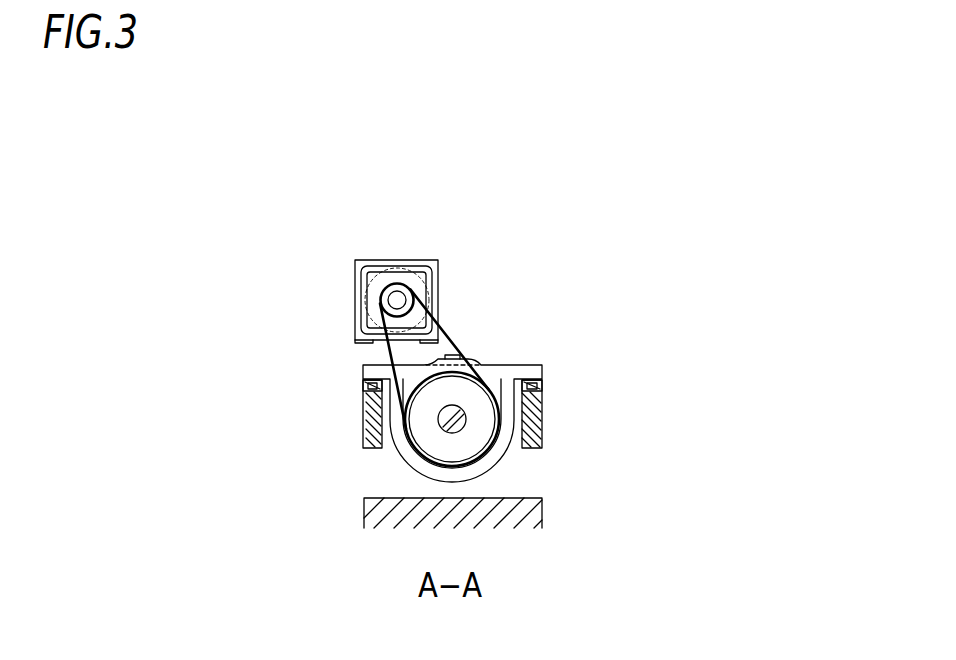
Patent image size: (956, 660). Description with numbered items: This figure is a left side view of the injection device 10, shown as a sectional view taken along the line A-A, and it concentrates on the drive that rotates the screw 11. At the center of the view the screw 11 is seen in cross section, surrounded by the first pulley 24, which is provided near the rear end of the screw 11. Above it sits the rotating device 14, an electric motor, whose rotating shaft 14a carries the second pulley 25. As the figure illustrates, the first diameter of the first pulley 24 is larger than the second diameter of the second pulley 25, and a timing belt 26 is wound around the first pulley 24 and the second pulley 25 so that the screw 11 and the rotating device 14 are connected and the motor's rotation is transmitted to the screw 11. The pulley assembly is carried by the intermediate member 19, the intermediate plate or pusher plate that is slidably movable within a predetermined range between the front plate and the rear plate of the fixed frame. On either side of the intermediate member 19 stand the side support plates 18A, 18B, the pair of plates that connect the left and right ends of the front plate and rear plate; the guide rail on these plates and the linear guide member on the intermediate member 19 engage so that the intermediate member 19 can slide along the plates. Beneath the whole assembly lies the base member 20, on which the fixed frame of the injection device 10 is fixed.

The injection device 10 is at (651, 160).
The screw 11 is at (446, 425).
The rotating device 14 is at (387, 273).
The rotating shaft 14a is at (394, 298).
The side support plate 18A is at (531, 424).
The side support plate 18B is at (373, 424).
The intermediate member 19 is at (490, 455).
The base member 20 is at (540, 508).
The first pulley 24 is at (475, 397).
The second pulley 25 is at (408, 290).
The timing belt 26 is at (454, 345).